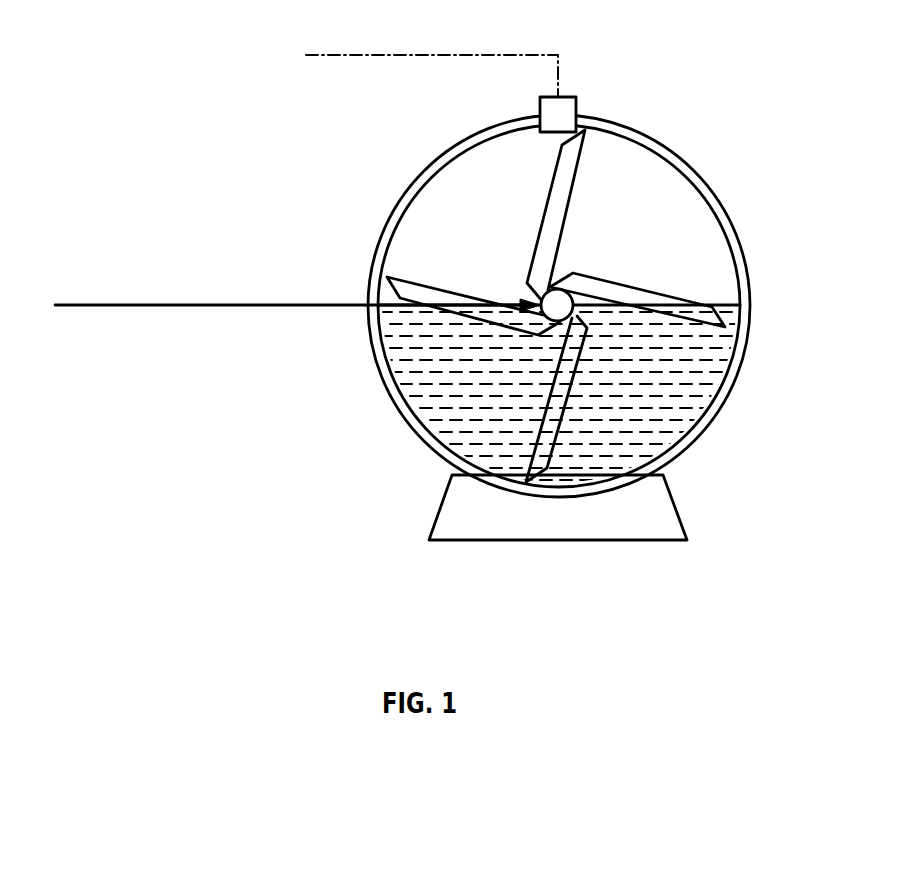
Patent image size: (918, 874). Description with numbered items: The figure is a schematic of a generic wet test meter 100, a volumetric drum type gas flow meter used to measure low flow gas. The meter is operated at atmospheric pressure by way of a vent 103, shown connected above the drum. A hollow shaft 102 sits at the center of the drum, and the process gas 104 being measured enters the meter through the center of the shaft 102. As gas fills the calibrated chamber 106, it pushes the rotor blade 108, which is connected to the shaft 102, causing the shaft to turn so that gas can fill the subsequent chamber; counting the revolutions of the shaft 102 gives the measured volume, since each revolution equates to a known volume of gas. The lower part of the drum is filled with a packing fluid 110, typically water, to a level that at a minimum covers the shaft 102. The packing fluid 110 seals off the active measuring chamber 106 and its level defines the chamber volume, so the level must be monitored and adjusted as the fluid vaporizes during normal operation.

The wet test meter 100 is at (472, 542).
The shaft 102 is at (573, 273).
The vent 103 is at (447, 55).
The process gas 104 is at (212, 305).
The calibrated chamber 106 is at (600, 187).
The rotor blade 108 is at (733, 332).
The packing fluid 110 is at (678, 395).